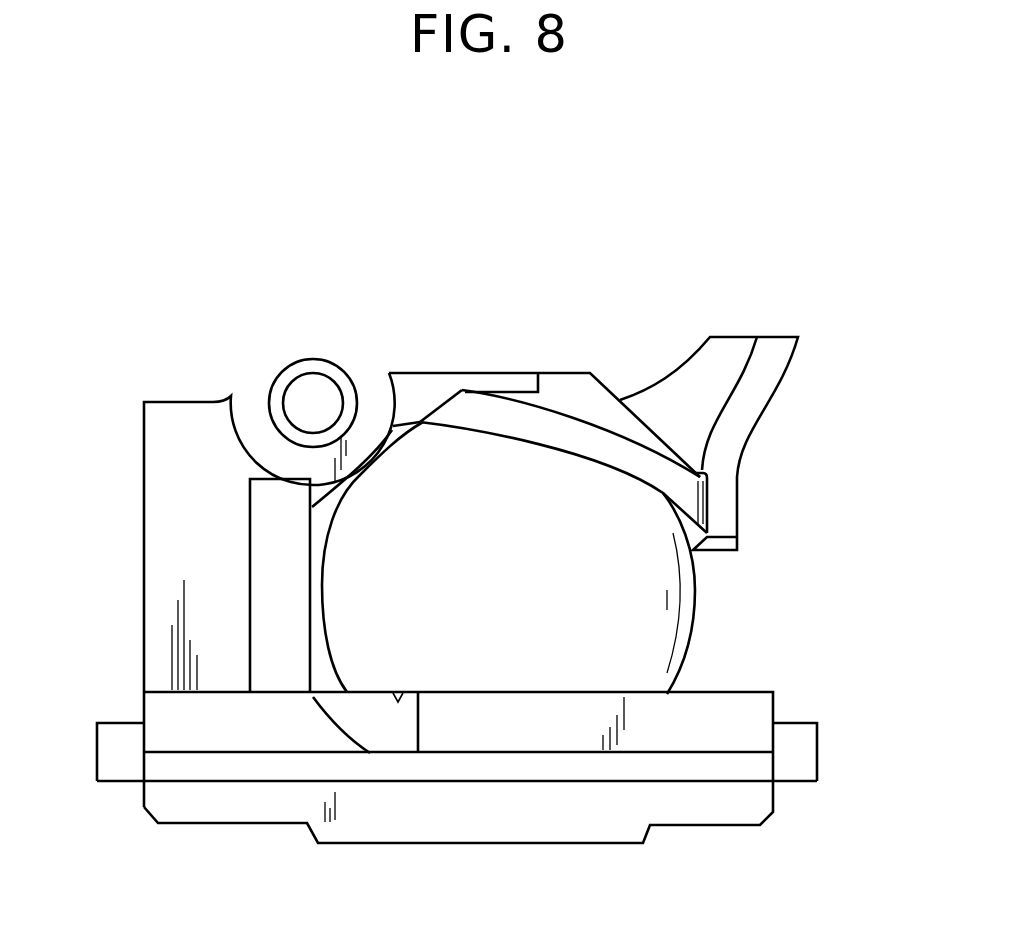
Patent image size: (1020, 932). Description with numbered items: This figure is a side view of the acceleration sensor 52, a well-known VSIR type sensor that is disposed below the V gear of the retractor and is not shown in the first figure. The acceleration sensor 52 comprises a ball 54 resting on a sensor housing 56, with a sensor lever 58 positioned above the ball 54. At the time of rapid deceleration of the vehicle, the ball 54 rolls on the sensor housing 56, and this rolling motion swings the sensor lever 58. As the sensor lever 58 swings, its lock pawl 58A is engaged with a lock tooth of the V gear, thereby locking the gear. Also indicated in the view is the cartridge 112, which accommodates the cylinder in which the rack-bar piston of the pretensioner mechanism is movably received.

The acceleration sensor 52 is at (508, 283).
The ball 54 is at (667, 643).
The sensor housing 56 is at (715, 810).
The sensor lever 58 is at (568, 373).
The lock pawl 58A is at (772, 352).
The cartridge 112 is at (107, 743).